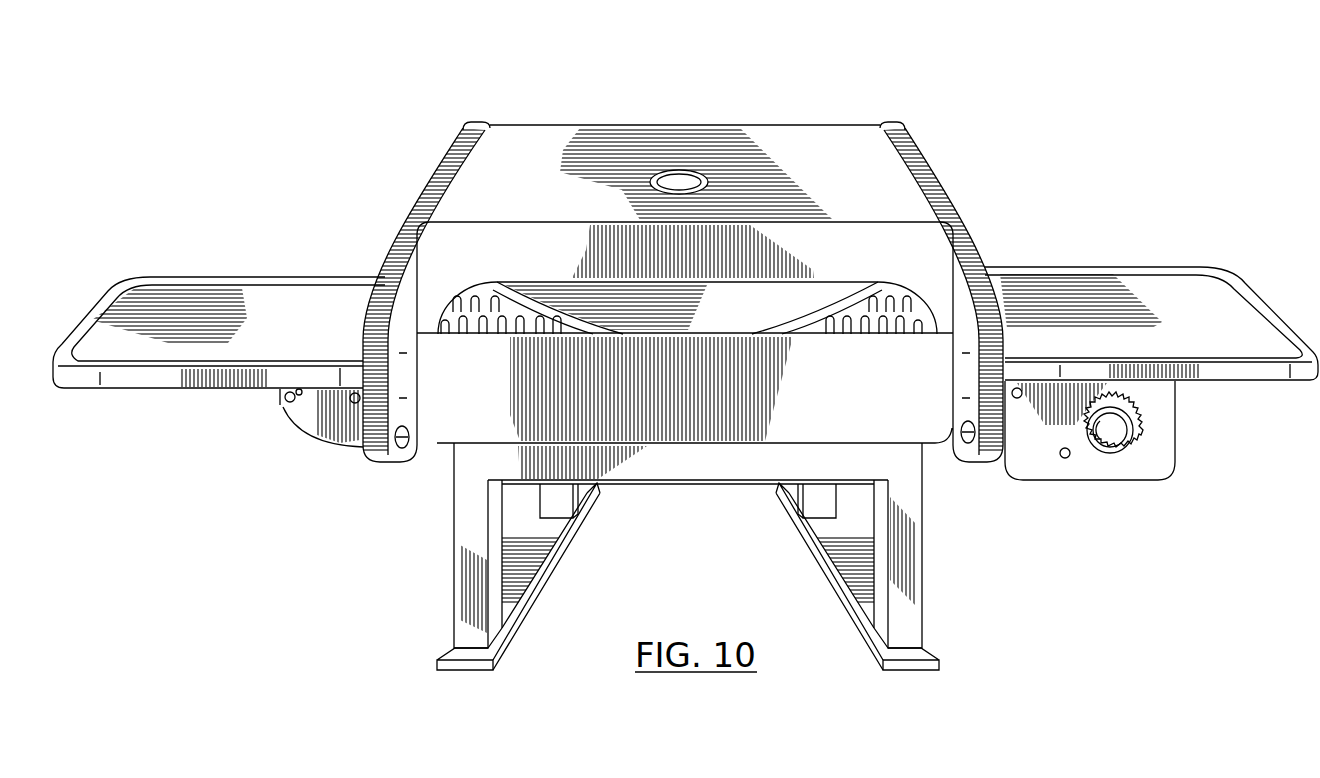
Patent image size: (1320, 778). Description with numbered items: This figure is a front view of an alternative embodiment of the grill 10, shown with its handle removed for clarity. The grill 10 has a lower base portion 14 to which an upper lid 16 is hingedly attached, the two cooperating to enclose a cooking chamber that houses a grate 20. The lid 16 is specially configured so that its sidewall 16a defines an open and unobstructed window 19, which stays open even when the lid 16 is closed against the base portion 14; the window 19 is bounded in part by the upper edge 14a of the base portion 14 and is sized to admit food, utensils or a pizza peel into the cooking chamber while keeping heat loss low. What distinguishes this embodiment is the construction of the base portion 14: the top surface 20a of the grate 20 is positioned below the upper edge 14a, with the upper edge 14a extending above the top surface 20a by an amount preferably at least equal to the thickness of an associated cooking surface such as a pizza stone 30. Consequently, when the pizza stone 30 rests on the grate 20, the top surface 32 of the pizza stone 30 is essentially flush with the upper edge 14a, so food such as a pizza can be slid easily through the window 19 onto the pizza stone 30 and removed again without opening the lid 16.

The grill 10 is at (945, 112).
The base portion 14 is at (893, 414).
The upper edge 14a is at (477, 333).
The lid 16 is at (827, 140).
The sidewall 16a is at (893, 237).
The window 19 is at (776, 315).
The grate 20 is at (898, 300).
The top surface 20a is at (488, 322).
The pizza stone 30 is at (832, 292).
The top surface 32 is at (573, 307).